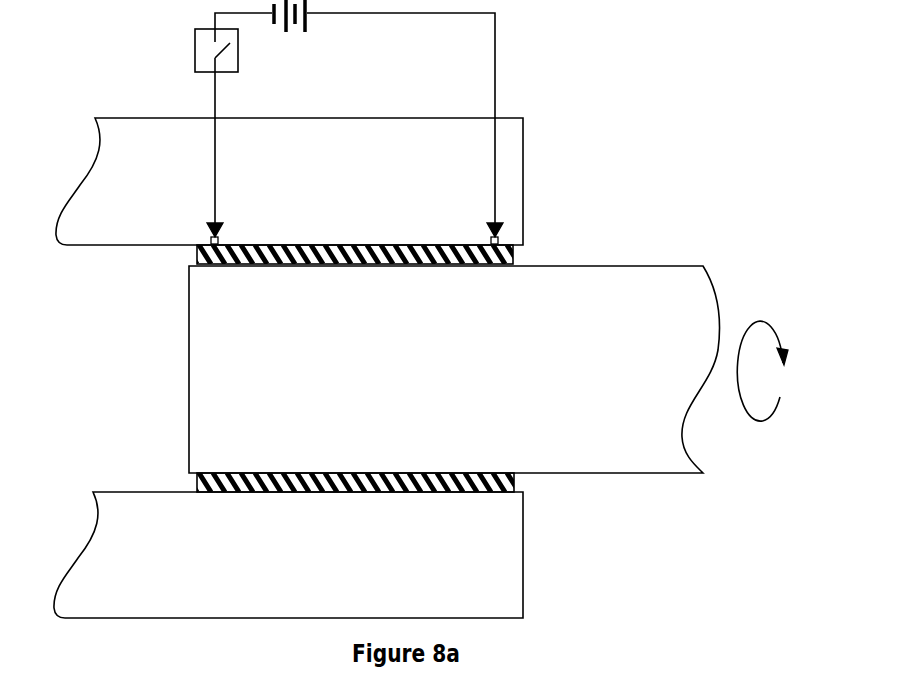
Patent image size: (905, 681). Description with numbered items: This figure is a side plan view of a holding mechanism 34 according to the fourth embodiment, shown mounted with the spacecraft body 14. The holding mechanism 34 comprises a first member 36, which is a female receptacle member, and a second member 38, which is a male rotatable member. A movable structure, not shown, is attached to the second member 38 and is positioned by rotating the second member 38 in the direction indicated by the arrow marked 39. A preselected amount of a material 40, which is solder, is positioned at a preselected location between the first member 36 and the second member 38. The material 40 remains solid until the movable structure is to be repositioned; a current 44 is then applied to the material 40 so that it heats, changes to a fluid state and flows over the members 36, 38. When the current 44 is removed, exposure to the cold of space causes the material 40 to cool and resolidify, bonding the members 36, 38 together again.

The spacecraft body 14 is at (304, 122).
The holding mechanism 34 is at (786, 185).
The first member 36 is at (288, 368).
The second member 38 is at (454, 369).
The arrow 39 is at (771, 328).
The material 40 is at (521, 251).
The current 44 is at (215, 165).